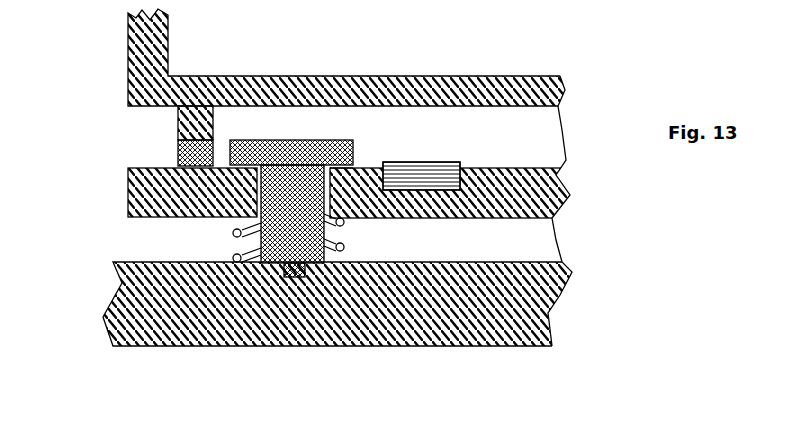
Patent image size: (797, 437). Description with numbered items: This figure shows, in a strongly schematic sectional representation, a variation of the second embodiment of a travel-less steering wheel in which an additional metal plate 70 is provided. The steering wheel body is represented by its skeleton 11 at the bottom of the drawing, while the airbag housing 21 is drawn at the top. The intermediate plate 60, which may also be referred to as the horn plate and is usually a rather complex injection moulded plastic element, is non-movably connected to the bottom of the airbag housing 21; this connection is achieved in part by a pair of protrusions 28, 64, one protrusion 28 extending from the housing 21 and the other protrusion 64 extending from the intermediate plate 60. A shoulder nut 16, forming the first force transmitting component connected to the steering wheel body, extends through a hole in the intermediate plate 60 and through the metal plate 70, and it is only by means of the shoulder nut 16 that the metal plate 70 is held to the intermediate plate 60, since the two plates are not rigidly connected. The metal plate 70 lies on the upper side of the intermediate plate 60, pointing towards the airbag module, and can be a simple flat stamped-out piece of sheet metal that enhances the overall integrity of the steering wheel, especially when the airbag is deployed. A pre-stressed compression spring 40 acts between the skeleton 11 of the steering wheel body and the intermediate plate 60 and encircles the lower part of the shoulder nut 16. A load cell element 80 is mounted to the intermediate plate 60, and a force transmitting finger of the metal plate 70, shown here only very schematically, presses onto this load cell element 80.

The skeleton 11 is at (550, 327).
The shoulder nut 16 is at (347, 170).
The airbag housing 21 is at (287, 88).
The protrusion 28 is at (190, 122).
The compression spring 40 is at (238, 234).
The intermediate plate 60 is at (552, 190).
The protrusion 64 is at (182, 150).
The metal plate 70 is at (178, 167).
The load cell element 80 is at (460, 168).